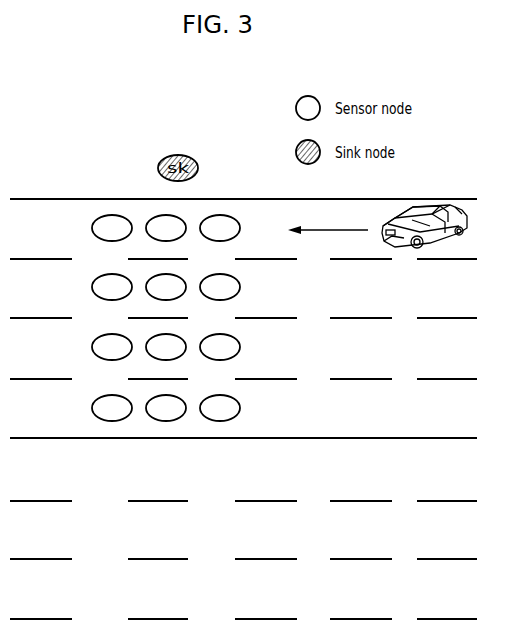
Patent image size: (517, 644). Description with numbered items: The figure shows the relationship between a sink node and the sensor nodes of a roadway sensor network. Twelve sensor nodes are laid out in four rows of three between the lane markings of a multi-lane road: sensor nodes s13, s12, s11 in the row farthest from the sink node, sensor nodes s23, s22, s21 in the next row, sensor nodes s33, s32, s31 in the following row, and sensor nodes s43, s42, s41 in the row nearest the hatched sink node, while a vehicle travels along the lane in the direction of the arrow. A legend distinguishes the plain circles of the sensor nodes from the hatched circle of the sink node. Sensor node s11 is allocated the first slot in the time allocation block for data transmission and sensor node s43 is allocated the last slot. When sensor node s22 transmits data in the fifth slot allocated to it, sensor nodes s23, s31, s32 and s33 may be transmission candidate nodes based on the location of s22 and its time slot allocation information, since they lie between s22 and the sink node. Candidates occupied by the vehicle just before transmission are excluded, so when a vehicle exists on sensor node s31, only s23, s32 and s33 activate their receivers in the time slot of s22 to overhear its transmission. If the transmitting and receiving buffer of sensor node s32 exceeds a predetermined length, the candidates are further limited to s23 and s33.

The sensor node s11 is at (220, 408).
The sensor node s12 is at (166, 408).
The sensor node s13 is at (112, 408).
The sensor node s21 is at (220, 347).
The sensor node s22 is at (166, 347).
The sensor node s23 is at (112, 347).
The sensor node s31 is at (220, 287).
The sensor node s32 is at (166, 287).
The sensor node s33 is at (112, 287).
The sensor node s41 is at (220, 228).
The sensor node s42 is at (166, 228).
The sensor node s43 is at (112, 228).